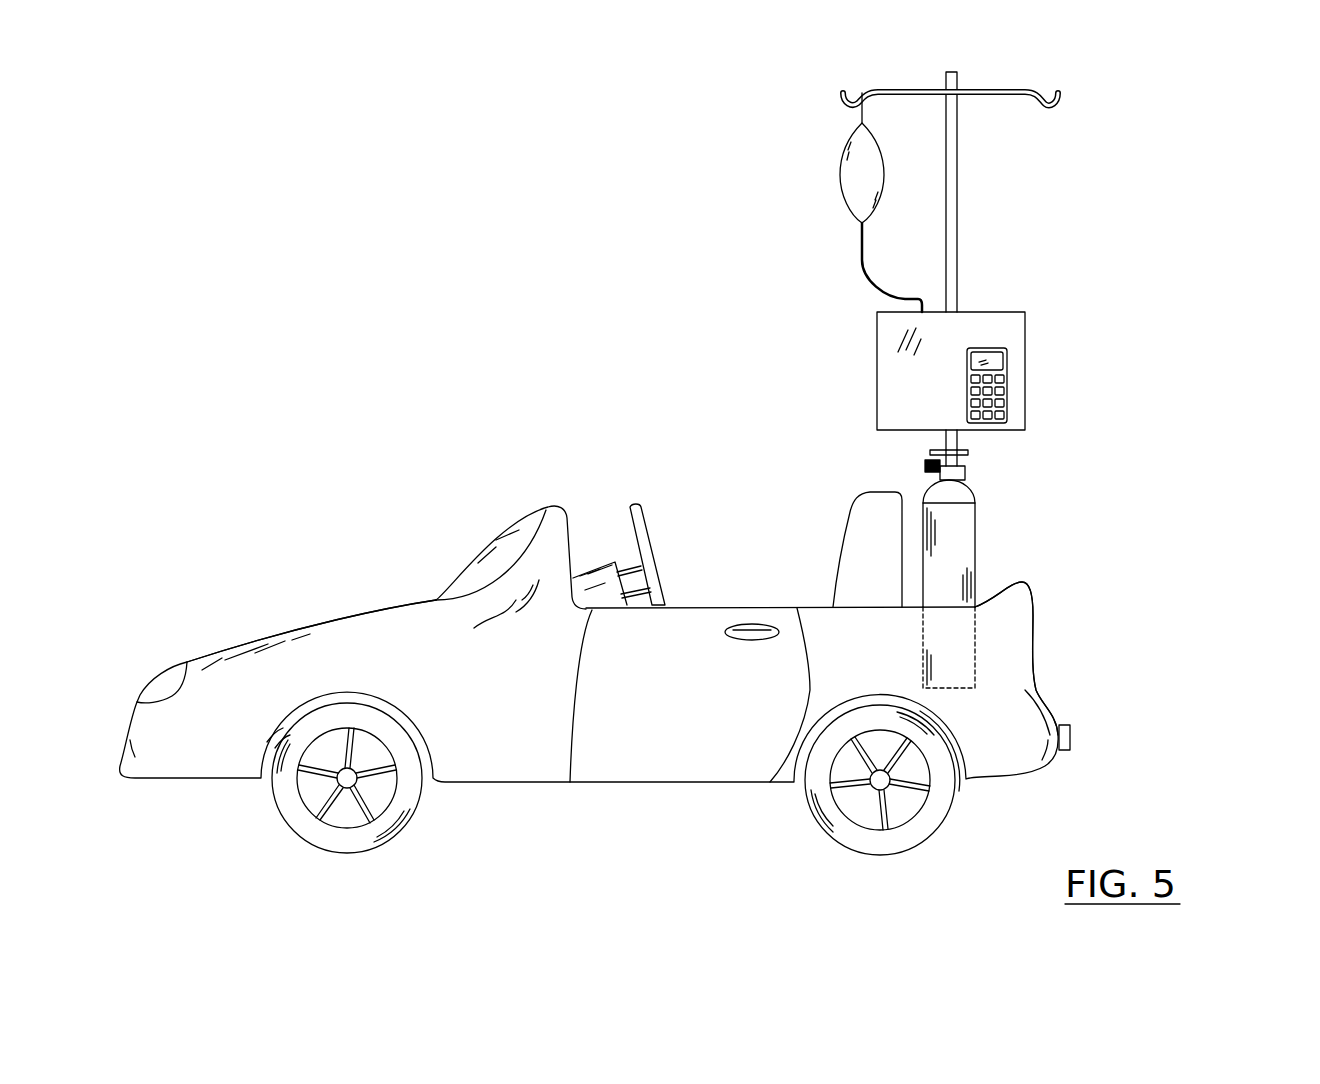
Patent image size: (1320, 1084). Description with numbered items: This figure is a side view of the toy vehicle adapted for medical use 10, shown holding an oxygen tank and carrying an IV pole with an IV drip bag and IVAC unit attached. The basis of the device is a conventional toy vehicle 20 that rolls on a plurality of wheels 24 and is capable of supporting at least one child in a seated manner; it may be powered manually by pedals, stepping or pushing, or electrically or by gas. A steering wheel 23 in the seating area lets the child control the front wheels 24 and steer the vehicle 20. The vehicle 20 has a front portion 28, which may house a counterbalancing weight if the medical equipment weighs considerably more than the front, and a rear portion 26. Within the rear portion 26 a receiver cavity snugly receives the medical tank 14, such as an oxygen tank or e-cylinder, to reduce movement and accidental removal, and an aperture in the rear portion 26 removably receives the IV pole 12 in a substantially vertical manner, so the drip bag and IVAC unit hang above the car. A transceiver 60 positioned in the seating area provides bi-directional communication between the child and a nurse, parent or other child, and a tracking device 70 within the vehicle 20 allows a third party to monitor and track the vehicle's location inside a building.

The toy vehicle adapted for medical use 10 is at (1053, 367).
The IV pole 12 is at (956, 155).
The medical tank 14 is at (968, 517).
The vehicle 20 is at (630, 655).
The steering wheel 23 is at (630, 508).
The wheels 24 is at (414, 793).
The rear portion 26 is at (1025, 592).
The front portion 28 is at (288, 635).
The transceiver 60 is at (628, 537).
The tracking device 70 is at (1066, 725).